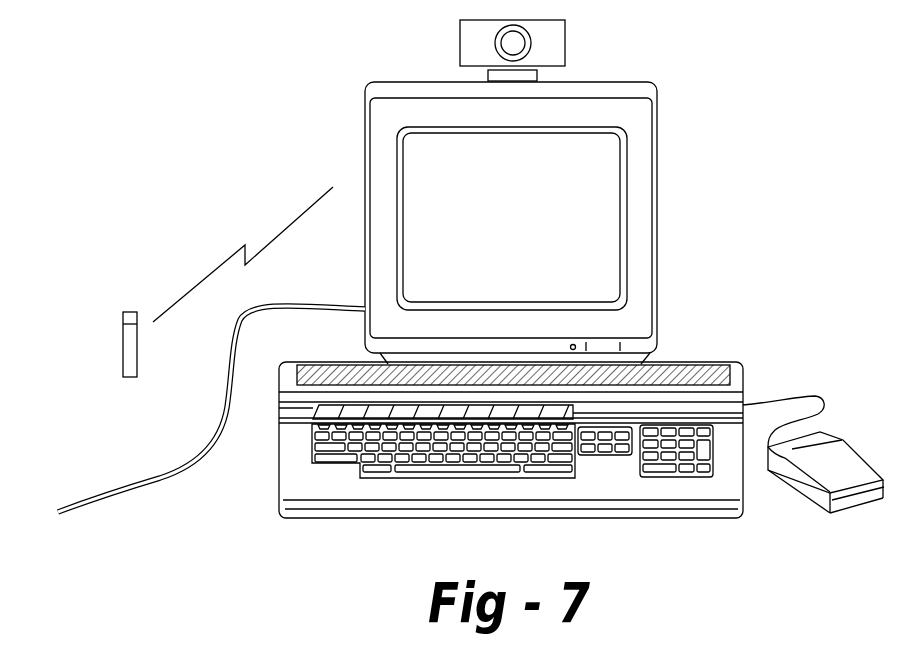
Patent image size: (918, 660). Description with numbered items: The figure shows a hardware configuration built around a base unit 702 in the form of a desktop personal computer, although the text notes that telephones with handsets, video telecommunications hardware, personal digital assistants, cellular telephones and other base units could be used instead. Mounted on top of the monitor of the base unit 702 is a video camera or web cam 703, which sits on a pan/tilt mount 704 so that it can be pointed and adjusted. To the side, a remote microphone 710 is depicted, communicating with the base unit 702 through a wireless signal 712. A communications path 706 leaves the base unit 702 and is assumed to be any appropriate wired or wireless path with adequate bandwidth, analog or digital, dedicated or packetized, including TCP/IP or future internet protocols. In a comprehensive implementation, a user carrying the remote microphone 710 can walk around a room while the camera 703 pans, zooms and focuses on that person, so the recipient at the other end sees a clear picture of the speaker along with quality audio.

The base unit 702 is at (648, 262).
The video camera 703 is at (465, 50).
The pan/tilt mount 704 is at (532, 77).
The communications path 706 is at (211, 415).
The remote microphone 710 is at (127, 346).
The wireless signal 712 is at (215, 268).